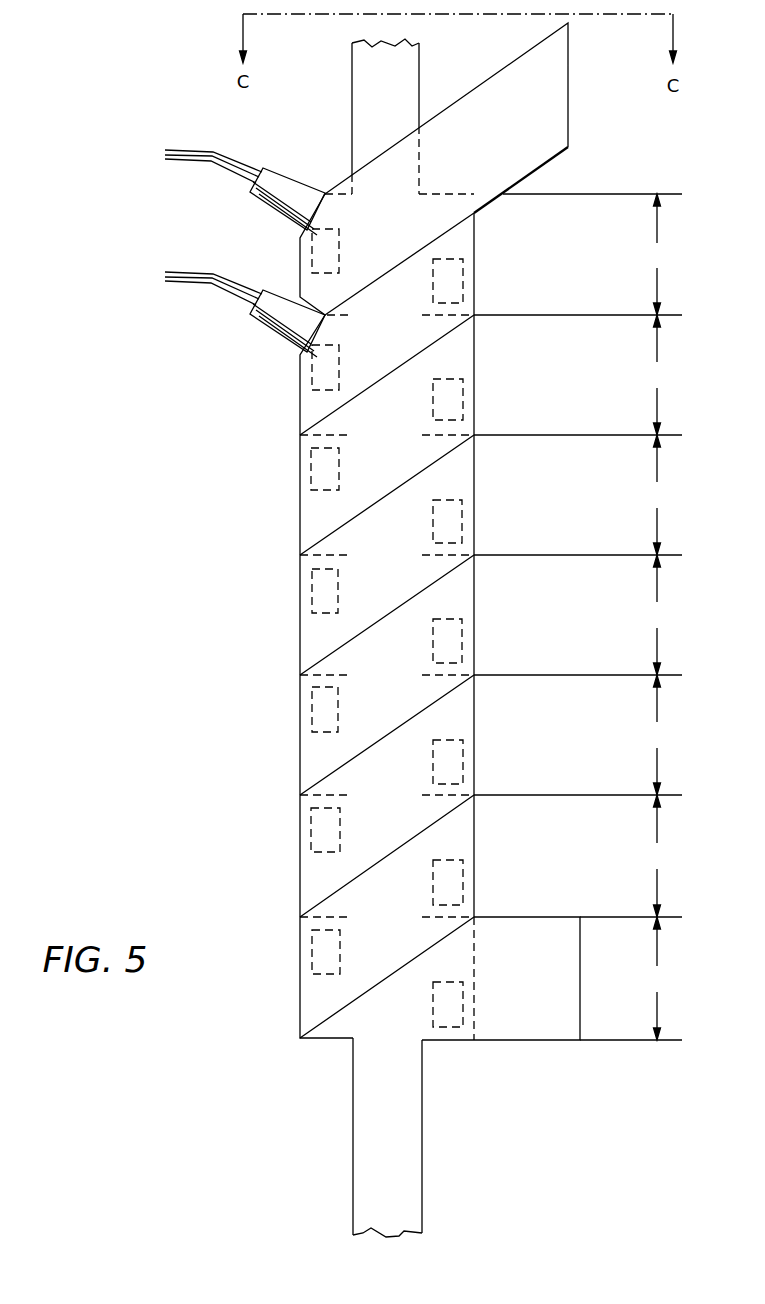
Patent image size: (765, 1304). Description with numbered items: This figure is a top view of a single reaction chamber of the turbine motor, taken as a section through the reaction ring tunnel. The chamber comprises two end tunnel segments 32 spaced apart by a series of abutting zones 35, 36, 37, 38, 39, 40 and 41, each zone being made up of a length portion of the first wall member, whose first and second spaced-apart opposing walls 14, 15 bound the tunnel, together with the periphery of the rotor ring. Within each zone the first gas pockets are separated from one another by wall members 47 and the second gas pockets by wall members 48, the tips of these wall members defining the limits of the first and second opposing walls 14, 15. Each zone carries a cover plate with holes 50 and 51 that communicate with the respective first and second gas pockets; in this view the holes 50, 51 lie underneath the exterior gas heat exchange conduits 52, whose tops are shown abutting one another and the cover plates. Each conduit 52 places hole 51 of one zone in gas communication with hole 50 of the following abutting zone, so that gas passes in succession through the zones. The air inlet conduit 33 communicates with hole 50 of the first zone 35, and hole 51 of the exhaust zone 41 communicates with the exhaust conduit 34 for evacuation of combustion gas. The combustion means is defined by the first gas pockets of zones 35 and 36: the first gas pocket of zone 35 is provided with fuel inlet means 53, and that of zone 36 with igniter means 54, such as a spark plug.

The first opposing wall 14 is at (352, 131).
The second opposing wall 15 is at (411, 92).
The end tunnel segment 32 is at (352, 103).
The air inlet conduit 33 is at (570, 62).
The exhaust conduit 34 is at (583, 1005).
The zone 35 is at (578, 254).
The zone 36 is at (578, 375).
The zone 37 is at (578, 495).
The zone 38 is at (578, 615).
The zone 39 is at (578, 735).
The zone 40 is at (631, 856).
The exhaust zone 41 is at (631, 978).
The wall member 47 is at (322, 556).
The wall member 48 is at (456, 560).
The hole 50 is at (332, 248).
The hole 51 is at (448, 522).
The exterior gas heat exchange conduit 52 is at (330, 683).
The fuel inlet means 53 is at (263, 168).
The igniter means 54 is at (260, 326).